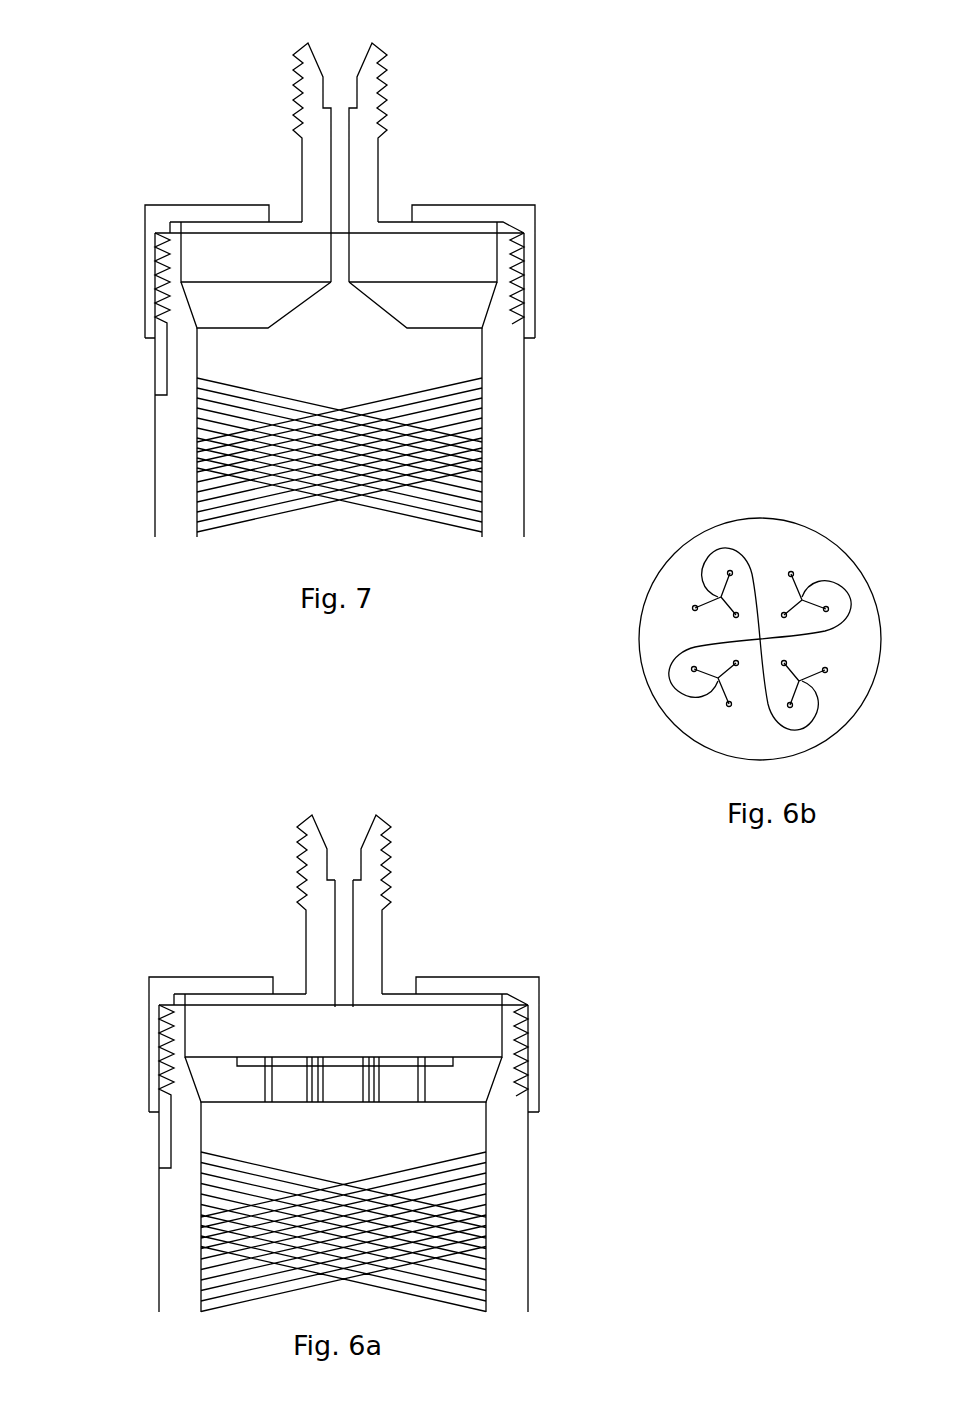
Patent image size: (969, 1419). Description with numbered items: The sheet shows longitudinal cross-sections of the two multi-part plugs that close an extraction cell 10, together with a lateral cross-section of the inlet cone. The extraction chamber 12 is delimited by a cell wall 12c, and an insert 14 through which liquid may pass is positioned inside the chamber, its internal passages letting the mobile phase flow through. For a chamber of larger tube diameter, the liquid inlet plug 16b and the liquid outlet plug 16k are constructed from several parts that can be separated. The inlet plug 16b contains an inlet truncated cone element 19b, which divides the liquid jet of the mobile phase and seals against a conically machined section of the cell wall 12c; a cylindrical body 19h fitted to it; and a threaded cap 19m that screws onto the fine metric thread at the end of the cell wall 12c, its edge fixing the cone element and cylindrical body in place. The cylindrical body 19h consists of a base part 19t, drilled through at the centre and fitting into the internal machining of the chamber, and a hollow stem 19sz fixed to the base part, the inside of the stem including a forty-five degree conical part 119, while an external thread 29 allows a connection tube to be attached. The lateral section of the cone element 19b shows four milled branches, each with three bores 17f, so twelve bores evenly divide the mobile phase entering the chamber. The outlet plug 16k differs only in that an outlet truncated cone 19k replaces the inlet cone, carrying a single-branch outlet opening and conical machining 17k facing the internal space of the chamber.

In FIG. 7, the extraction cell 10 is at (541, 128).
In FIG. 6a, the extraction cell 10 is at (546, 905).
In FIG. 7, the extraction chamber 12 is at (145, 465).
In FIG. 6a, the extraction chamber 12 is at (148, 1237).
In FIG. 7, the cell wall 12c is at (498, 398).
In FIG. 6a, the cell wall 12c is at (503, 1173).
In FIG. 7, the insert 14 is at (470, 447).
In FIG. 6a, the insert 14 is at (470, 1227).
In FIG. 7, the liquid outlet plug 16k is at (134, 148).
In FIG. 6a, the liquid inlet plug 16b is at (140, 924).
In FIG. 7, the conical machining 17k is at (403, 323).
In FIG. 6b, the bores 17f is at (790, 571).
In FIG. 6a, the bores 17f is at (430, 1080).
In FIG. 7, the threaded cap 19m is at (520, 222).
In FIG. 6a, the threaded cap 19m is at (527, 995).
In FIG. 7, the base part 19t is at (250, 245).
In FIG. 6a, the base part 19t is at (253, 1018).
In FIG. 7, the cylindrical body 19h is at (400, 247).
In FIG. 6a, the cylindrical body 19h is at (403, 1017).
In FIG. 7, the outlet truncated cone 19k is at (220, 307).
In FIG. 6b, the inlet truncated cone element 19b is at (868, 578).
In FIG. 6a, the inlet truncated cone element 19b is at (225, 1082).
In FIG. 7, the hollow stem 19sz is at (376, 157).
In FIG. 6a, the hollow stem 19sz is at (306, 953).
In FIG. 7, the external thread 29 is at (293, 67).
In FIG. 6a, the external thread 29 is at (383, 832).
In FIG. 6a, the conical part 119 is at (343, 832).